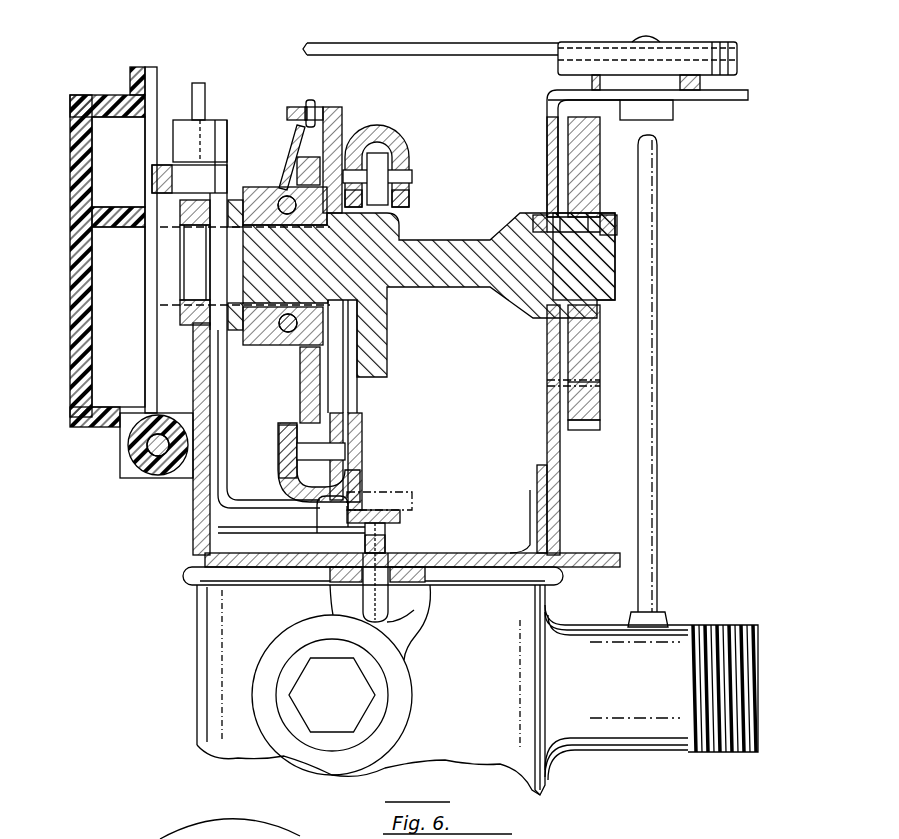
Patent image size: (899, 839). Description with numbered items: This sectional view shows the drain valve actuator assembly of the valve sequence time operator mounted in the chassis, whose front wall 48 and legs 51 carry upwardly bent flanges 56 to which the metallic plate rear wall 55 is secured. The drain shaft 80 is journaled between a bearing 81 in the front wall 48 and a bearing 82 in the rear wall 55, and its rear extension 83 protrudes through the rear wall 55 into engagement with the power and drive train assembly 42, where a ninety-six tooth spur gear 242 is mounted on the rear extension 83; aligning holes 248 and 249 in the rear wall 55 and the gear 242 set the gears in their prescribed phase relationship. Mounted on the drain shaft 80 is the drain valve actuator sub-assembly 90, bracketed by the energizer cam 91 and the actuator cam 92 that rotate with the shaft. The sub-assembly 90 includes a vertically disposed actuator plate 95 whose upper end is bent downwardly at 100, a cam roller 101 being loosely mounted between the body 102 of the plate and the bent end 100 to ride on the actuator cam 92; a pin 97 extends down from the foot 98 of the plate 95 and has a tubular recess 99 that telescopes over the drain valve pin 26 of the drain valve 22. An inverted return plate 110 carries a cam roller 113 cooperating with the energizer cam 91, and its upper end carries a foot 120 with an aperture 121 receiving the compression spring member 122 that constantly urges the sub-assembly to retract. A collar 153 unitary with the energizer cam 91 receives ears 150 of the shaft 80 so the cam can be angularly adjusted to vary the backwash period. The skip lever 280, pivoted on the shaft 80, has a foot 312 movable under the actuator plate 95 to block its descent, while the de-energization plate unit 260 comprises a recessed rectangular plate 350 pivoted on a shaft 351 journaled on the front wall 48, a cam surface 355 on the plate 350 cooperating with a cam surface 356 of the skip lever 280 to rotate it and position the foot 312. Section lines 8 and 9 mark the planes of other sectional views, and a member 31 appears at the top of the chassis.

The recessed rectangular plate 350 is at (72, 108).
The cam surface 356 is at (165, 170).
The drain valve actuator sub-assembly 90 is at (237, 105).
The foot 120 is at (298, 109).
The aperture 121 is at (312, 102).
The compression spring member 122 is at (296, 136).
The section line 9- 9 is at (405, 101).
The section line 8- 8 is at (298, 150).
The cam roller 101 is at (382, 163).
The downwardly bent upper end 100 is at (407, 168).
The body 102 is at (367, 198).
The ears 150 is at (282, 198).
The bearing 82 is at (553, 222).
The power and drive train assembly 42 is at (617, 198).
The rear extension 83 is at (612, 273).
The cam surface 355 is at (172, 205).
The bearing 81 is at (190, 285).
The drain shaft 80 is at (447, 292).
The return plate 110 is at (336, 366).
The actuator cam 92 is at (374, 352).
The collar 153 is at (292, 341).
The energizer cam 91 is at (302, 408).
The actuator plate 95 is at (360, 442).
The cam roller 113 is at (286, 480).
The foot 98 is at (386, 512).
The aligning hole 249 is at (600, 383).
The aligning hole 248 is at (546, 387).
The spur gear 242 is at (600, 403).
The upwardly bent flanges 56 is at (546, 470).
The rear wall 55 is at (562, 460).
The de-energization plate unit 260 is at (88, 427).
The shaft 351 is at (148, 447).
The front wall 48 is at (198, 498).
The foot 312 is at (238, 527).
The pin 97 is at (390, 543).
The tubular recess 99 is at (408, 555).
The legs 51 is at (518, 553).
The skip lever 280 is at (253, 543).
The drain valve pin 26 is at (390, 601).
The drain valve 22 is at (458, 716).
The mounting bracket 31 is at (682, 38).